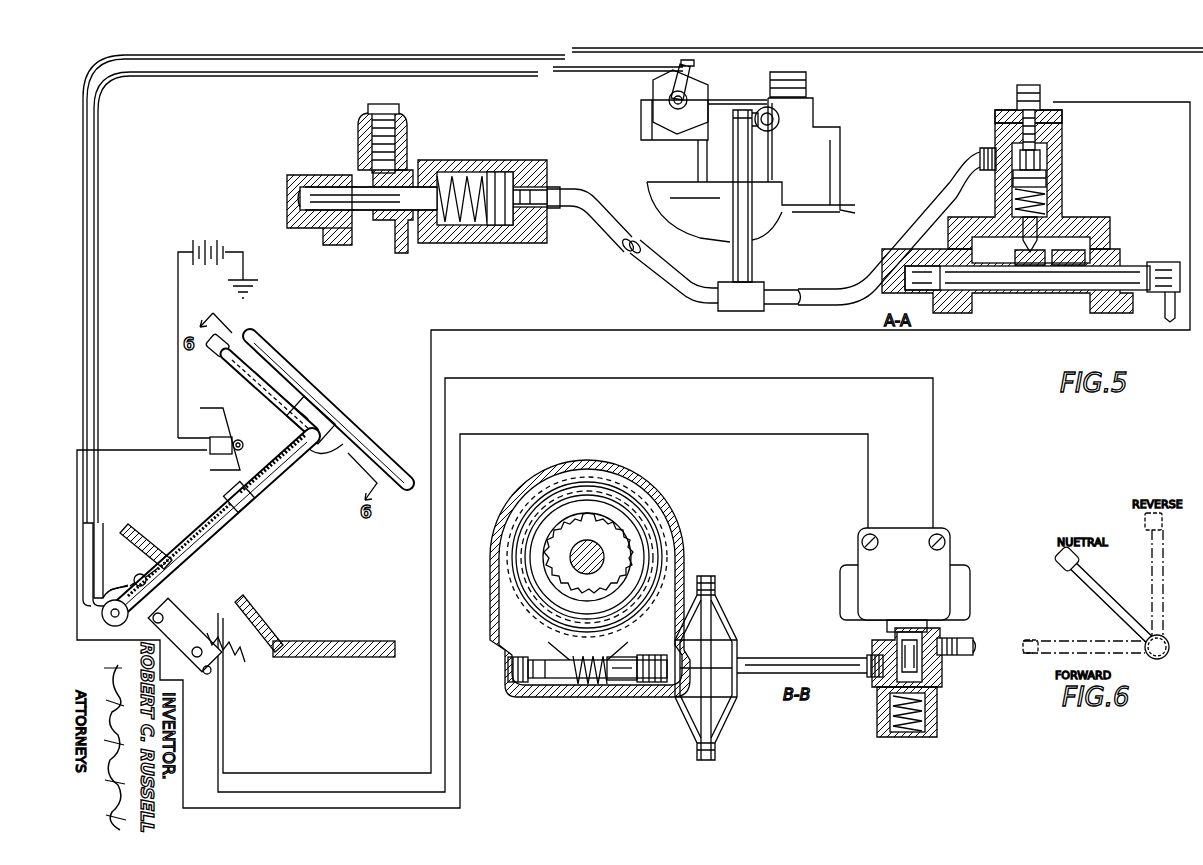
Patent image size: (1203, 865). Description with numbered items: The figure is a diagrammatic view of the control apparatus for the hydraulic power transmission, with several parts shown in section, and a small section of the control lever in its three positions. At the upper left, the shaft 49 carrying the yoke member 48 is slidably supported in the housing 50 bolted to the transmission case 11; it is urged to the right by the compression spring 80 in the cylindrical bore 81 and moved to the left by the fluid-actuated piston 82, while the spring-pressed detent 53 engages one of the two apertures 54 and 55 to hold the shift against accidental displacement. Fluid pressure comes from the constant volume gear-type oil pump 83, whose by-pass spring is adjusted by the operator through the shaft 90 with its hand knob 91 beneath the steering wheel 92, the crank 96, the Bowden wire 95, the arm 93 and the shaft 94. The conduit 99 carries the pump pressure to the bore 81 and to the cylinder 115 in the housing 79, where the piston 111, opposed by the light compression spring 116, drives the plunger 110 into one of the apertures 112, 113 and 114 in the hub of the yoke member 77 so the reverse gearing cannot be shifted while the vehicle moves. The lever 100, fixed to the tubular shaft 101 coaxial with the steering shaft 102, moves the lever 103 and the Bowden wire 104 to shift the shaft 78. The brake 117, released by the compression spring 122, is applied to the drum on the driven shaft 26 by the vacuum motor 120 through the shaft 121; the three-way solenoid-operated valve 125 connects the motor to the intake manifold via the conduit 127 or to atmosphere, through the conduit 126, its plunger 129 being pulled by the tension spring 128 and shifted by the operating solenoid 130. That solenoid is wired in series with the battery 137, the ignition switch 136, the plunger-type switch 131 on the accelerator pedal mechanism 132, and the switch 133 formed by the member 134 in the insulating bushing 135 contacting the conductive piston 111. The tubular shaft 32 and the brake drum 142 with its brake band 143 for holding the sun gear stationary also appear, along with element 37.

In FIG. 5, the transmission case 11 is at (678, 526).
In FIG. 5, the driven shaft 26 is at (604, 566).
In FIG. 5, the tubular shaft 32 is at (592, 520).
In FIG. 5, the gear ring 37 is at (546, 530).
In FIG. 5, the yoke member 48 is at (402, 252).
In FIG. 5, the shaft 49 is at (352, 197).
In FIG. 5, the housing 50 is at (336, 238).
In FIG. 5, the spring-pressed detent 53 is at (396, 152).
In FIG. 5, the aperture 54 is at (372, 165).
In FIG. 5, the aperture 55 is at (416, 185).
In FIG. 5, the yoke member 77 is at (1032, 278).
In FIG. 5, the shaft 78 is at (1152, 293).
In FIG. 5, the housing 79 is at (1106, 250).
In FIG. 5, the compression spring 80 is at (490, 226).
In FIG. 5, the cylindrical bore 81 is at (506, 186).
In FIG. 5, the fluid-actuated piston 82 is at (508, 230).
In FIG. 5, the oil pump 83 is at (835, 166).
In FIG. 5, the shaft 90 is at (271, 398).
In FIG. 5, the hand knob 91 is at (216, 353).
In FIG. 6, the hand knob 91 is at (1068, 568).
In FIG. 5, the steering wheel 92 is at (286, 368).
In FIG. 5, the arm 93 is at (694, 86).
In FIG. 5, the shaft 94 is at (670, 100).
In FIG. 5, the Bowden wire 95 is at (580, 78).
In FIG. 5, the crank 96 is at (304, 458).
In FIG. 5, the conduit 99 is at (648, 262).
In FIG. 5, the lever 100 is at (256, 412).
In FIG. 6, the lever 100 is at (1092, 577).
In FIG. 5, the tubular shaft 101 is at (238, 508).
In FIG. 5, the steering shaft 102 is at (222, 538).
In FIG. 5, the lever 103 is at (141, 557).
In FIG. 5, the Bowden wire 104 is at (912, 60).
In FIG. 5, the plunger 110 is at (1056, 228).
In FIG. 5, the piston 111 is at (1050, 185).
In FIG. 5, the aperture 112 is at (1026, 262).
In FIG. 5, the aperture 113 is at (1040, 268).
In FIG. 5, the aperture 114 is at (1068, 265).
In FIG. 5, the cylinder 115 is at (1041, 158).
In FIG. 5, the compression spring 116 is at (1022, 201).
In FIG. 5, the brake 117 is at (613, 491).
In FIG. 5, the vacuum motor 120 is at (736, 625).
In FIG. 5, the shaft 121 is at (624, 690).
In FIG. 5, the compression spring 122 is at (590, 690).
In FIG. 5, the three-way solenoid-operated valve 125 is at (876, 651).
In FIG. 5, the conduit 126 is at (766, 660).
In FIG. 5, the conduit 127 is at (960, 646).
In FIG. 5, the tension spring 128 is at (882, 729).
In FIG. 5, the plunger 129 is at (926, 662).
In FIG. 5, the operating solenoid 130 is at (950, 561).
In FIG. 5, the plunger-type switch 131 is at (180, 626).
In FIG. 5, the accelerator pedal mechanism 132 is at (271, 620).
In FIG. 5, the switch 133 is at (1000, 112).
In FIG. 5, the member 134 is at (1040, 88).
In FIG. 5, the insulating bushing 135 is at (996, 121).
In FIG. 5, the ignition switch 136 is at (209, 458).
In FIG. 5, the battery 137 is at (213, 238).
In FIG. 5, the brake drum 142 is at (540, 611).
In FIG. 5, the brake band 143 is at (517, 596).